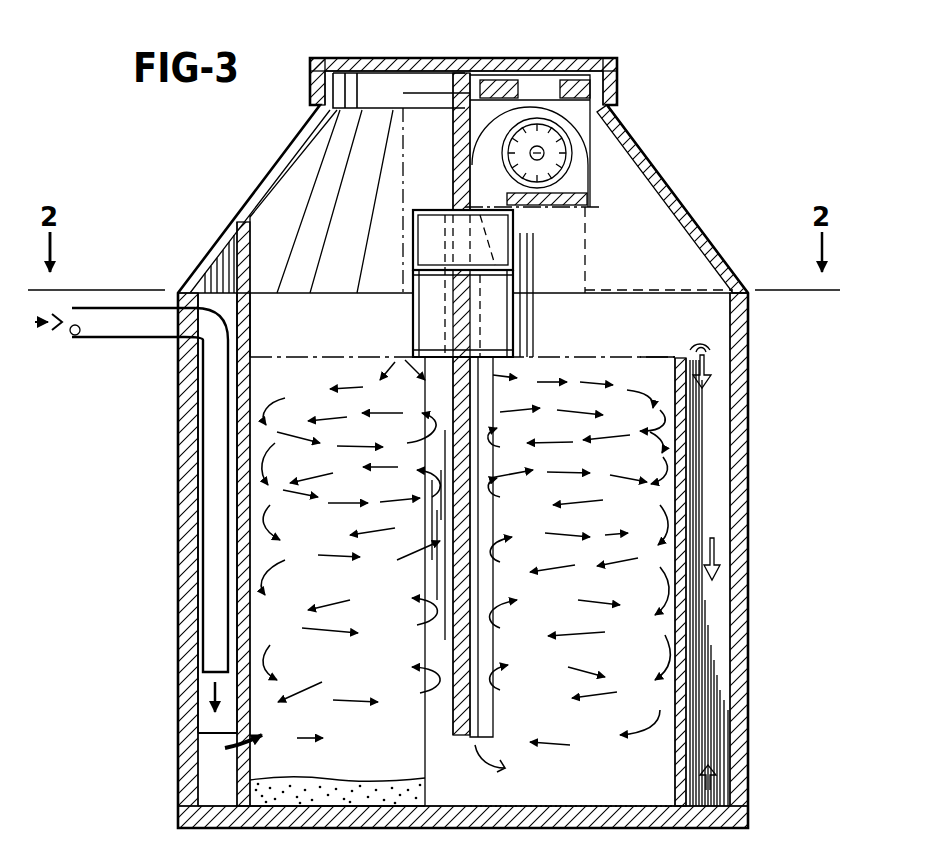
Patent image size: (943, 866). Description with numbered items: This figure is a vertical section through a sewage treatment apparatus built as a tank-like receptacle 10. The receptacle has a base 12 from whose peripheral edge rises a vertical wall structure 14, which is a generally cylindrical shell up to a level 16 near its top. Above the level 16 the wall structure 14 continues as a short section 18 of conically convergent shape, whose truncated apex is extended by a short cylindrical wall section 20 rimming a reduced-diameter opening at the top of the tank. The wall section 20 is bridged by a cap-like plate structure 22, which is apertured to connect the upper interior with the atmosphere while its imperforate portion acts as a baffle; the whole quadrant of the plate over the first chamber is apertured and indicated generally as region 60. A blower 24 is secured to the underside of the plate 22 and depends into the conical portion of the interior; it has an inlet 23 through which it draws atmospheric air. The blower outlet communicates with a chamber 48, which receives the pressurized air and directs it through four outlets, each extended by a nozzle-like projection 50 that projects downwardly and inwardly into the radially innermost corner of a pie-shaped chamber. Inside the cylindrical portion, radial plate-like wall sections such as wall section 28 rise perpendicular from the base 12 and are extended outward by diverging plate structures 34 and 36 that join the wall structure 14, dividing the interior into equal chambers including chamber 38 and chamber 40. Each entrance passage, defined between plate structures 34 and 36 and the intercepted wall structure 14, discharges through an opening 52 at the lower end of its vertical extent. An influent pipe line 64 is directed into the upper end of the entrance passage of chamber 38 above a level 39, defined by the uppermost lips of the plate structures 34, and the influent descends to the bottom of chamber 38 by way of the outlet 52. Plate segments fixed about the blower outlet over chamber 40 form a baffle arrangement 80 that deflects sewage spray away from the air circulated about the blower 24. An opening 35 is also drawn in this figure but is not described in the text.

The tank-like receptacle 10 is at (668, 170).
The base 12 is at (555, 829).
The vertical wall structure 14 is at (742, 505).
The level 16 is at (749, 292).
The short wall section 18 is at (695, 223).
The short wall section 20 is at (605, 86).
The cap-like plate structure 22 is at (574, 54).
The inlet 23 is at (553, 176).
The blower 24 is at (500, 140).
The plate-like wall section 28 is at (455, 139).
The plate structure 34 is at (718, 478).
The opening 35 is at (716, 352).
The plate structure 36 is at (196, 682).
The chamber 38 is at (314, 536).
The level 39 is at (638, 356).
The chamber 40 is at (630, 534).
The chamber 48 is at (446, 244).
The nozzle-like projection 50 is at (413, 322).
The opening 52 is at (196, 758).
The apertured quadrant 60 is at (381, 57).
The influent pipe line 64 is at (110, 338).
The baffle arrangement 80 is at (596, 207).